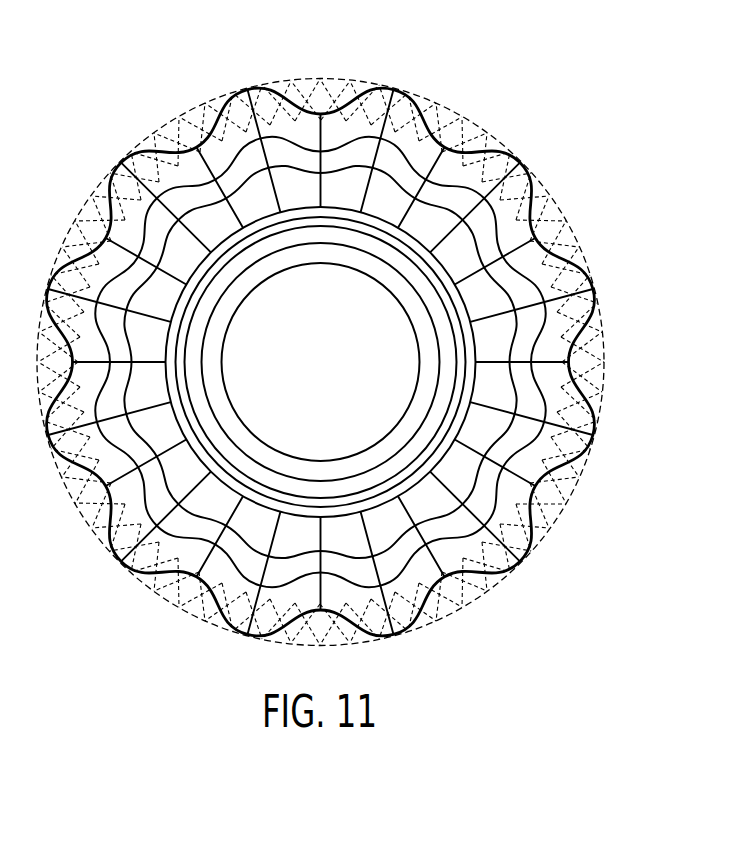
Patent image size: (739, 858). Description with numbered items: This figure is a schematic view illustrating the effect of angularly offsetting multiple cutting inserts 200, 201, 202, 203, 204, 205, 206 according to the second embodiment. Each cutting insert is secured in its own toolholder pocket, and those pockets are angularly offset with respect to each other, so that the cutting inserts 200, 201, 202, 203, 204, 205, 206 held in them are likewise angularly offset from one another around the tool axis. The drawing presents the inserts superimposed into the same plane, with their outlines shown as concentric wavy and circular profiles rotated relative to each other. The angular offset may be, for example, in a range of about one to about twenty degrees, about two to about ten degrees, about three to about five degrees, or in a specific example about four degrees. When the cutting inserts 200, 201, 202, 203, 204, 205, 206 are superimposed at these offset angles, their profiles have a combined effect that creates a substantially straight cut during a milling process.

The cutting insert 200 is at (393, 87).
The cutting insert 201 is at (408, 108).
The cutting insert 202 is at (458, 118).
The cutting insert 203 is at (462, 121).
The cutting insert 204 is at (474, 126).
The cutting insert 205 is at (494, 151).
The cutting insert 206 is at (524, 138).